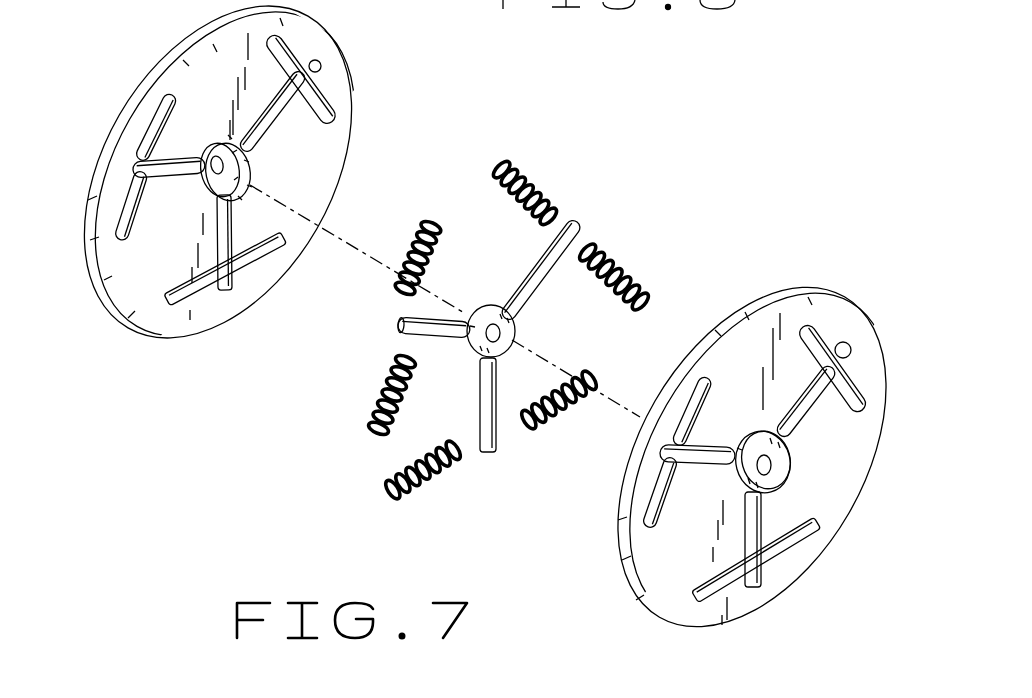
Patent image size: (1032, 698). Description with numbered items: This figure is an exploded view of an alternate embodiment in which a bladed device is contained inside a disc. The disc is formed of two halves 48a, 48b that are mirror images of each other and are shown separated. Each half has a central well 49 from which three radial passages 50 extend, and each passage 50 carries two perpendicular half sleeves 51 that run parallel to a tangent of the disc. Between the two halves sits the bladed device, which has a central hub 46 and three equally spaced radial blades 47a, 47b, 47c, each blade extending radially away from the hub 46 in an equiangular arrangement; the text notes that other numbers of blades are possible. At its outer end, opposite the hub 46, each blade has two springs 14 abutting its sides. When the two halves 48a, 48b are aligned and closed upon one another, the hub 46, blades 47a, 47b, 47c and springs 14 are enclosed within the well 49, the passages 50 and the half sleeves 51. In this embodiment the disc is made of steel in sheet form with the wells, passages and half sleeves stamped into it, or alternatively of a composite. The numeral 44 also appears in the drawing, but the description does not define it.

The spring 14 is at (533, 182).
The hub of second disc 44 is at (777, 463).
The central hub 46 is at (493, 307).
The radial blade 47a is at (490, 430).
The radial blade 47b is at (398, 317).
The radial blade 47c is at (575, 218).
The disc half 48a is at (138, 282).
The disc half 48b is at (658, 592).
The well 49 is at (202, 195).
The radial passage 50 is at (140, 167).
The half sleeve 51 is at (176, 92).